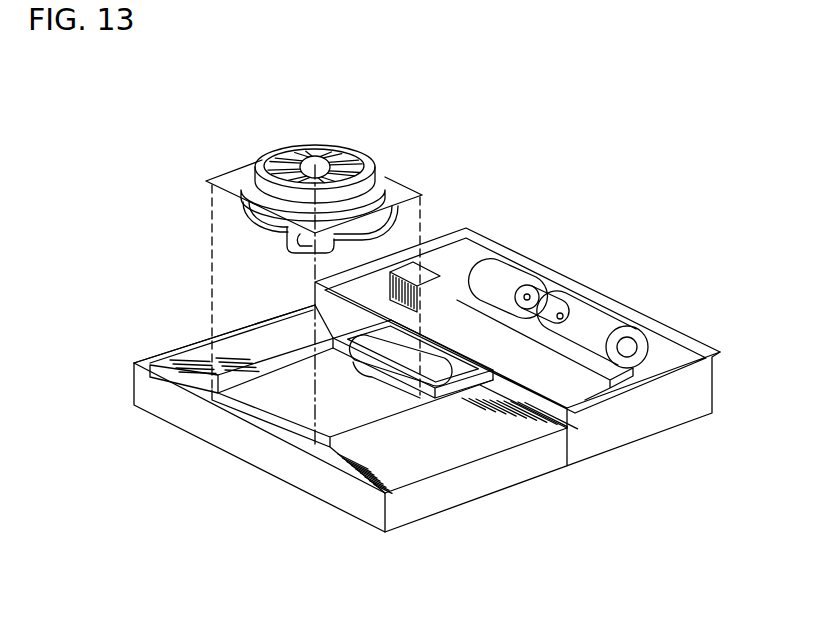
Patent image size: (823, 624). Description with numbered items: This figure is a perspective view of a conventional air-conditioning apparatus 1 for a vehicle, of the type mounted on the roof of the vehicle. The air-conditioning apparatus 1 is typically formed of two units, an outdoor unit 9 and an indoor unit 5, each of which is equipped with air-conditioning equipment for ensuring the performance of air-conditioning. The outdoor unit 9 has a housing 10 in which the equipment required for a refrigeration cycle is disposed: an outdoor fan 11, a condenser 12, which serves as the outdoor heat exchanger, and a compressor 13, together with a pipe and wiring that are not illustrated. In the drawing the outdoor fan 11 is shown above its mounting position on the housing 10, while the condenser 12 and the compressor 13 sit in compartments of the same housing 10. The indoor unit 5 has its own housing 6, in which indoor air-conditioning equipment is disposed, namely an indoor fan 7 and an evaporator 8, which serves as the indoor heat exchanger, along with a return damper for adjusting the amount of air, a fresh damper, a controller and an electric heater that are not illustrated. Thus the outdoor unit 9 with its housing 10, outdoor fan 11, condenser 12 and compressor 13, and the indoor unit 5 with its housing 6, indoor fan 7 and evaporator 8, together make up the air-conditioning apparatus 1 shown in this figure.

The air-conditioning apparatus 1 is at (446, 391).
The indoor unit 5 is at (675, 328).
The housing 6 is at (680, 413).
The indoor fan 7 is at (503, 275).
The evaporator 8 is at (603, 360).
The outdoor unit 9 is at (272, 483).
The housing 10 is at (411, 515).
The outdoor fan 11 is at (352, 155).
The condenser 12 is at (477, 452).
The compressor 13 is at (418, 397).